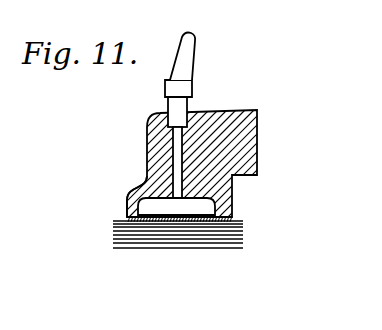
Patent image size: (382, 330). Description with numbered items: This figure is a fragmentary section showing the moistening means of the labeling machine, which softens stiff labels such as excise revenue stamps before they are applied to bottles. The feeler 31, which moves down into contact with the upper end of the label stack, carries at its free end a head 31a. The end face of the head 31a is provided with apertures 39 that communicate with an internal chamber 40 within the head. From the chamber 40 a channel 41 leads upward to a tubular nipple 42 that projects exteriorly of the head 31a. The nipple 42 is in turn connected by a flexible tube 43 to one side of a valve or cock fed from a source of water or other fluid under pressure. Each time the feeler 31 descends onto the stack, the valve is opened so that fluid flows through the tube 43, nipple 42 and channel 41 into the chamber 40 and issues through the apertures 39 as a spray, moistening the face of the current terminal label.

The feeler 31 is at (241, 156).
The head 31a is at (151, 167).
The apertures 39 is at (188, 221).
The internal chamber 40 is at (139, 205).
The channel 41 is at (175, 141).
The tubular nipple 42 is at (179, 108).
The flexible tube 43 is at (194, 53).